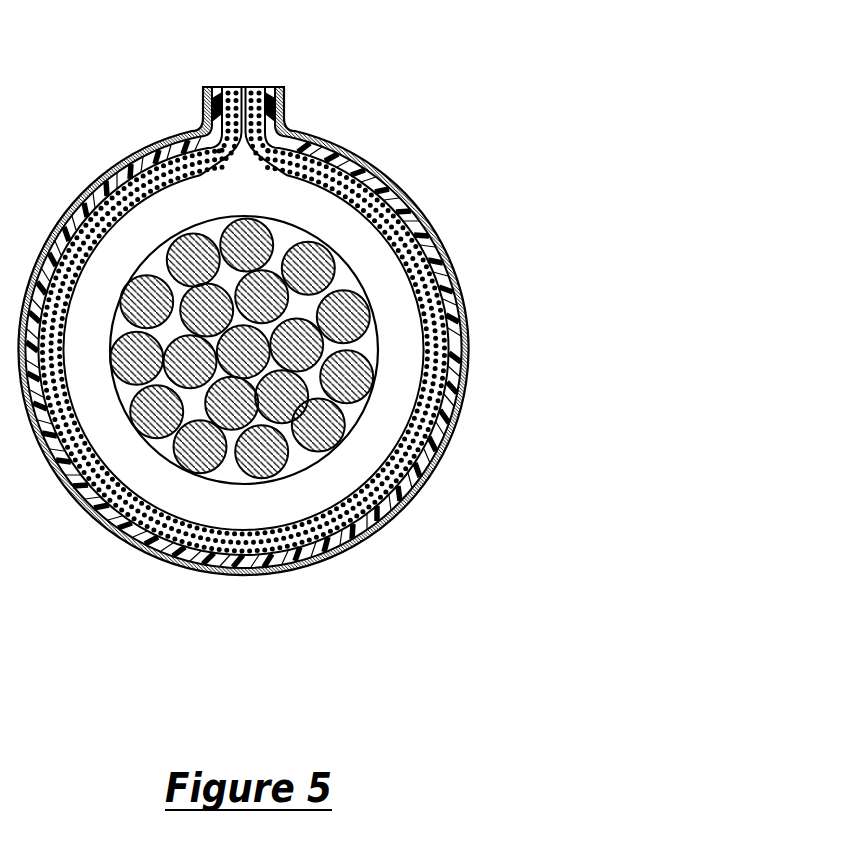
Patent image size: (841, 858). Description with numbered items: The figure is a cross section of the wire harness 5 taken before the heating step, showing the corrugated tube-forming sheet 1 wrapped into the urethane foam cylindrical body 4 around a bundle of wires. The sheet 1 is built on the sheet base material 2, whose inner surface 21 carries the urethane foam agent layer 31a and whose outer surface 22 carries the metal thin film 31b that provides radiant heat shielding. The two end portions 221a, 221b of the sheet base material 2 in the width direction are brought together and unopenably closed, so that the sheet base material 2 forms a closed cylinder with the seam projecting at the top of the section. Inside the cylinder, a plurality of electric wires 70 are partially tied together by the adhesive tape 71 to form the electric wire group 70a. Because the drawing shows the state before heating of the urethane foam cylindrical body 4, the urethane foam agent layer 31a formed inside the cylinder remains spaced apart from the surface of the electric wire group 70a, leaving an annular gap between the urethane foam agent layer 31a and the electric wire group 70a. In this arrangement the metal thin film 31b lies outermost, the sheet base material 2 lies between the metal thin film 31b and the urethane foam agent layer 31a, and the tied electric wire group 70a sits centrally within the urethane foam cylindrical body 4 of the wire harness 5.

The corrugated tube-forming sheet 1 is at (604, 314).
The sheet base material 2 is at (470, 317).
The urethane foam cylindrical body 4 is at (438, 176).
The wire harness 5 is at (480, 84).
The inner surface 21 is at (433, 278).
The outer surface 22 is at (433, 223).
The urethane foam agent layer 31a is at (452, 362).
The metal thin film 31b is at (443, 255).
The electric wire 70 is at (328, 432).
The electric wire group 70a is at (305, 508).
The adhesive tape 71 is at (221, 482).
The end portion in the width direction 221a is at (304, 103).
The end portion in the width direction 221b is at (186, 103).